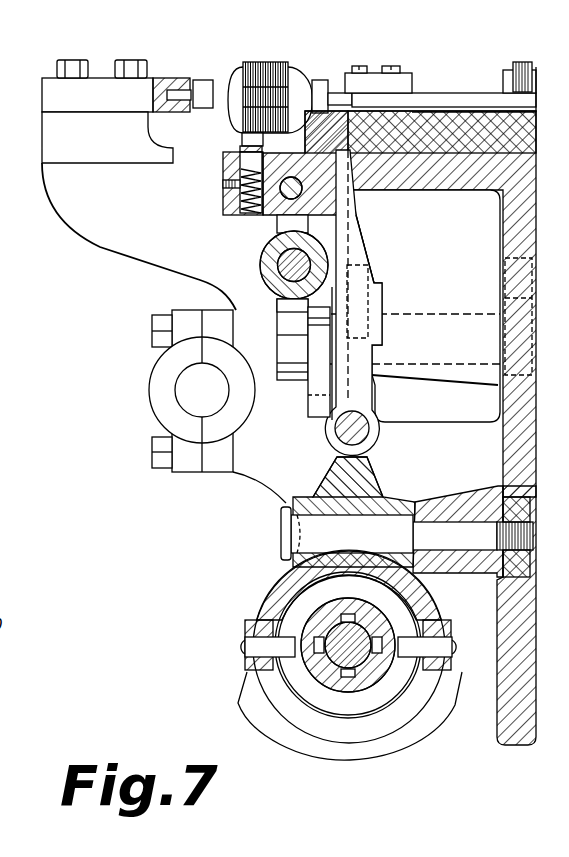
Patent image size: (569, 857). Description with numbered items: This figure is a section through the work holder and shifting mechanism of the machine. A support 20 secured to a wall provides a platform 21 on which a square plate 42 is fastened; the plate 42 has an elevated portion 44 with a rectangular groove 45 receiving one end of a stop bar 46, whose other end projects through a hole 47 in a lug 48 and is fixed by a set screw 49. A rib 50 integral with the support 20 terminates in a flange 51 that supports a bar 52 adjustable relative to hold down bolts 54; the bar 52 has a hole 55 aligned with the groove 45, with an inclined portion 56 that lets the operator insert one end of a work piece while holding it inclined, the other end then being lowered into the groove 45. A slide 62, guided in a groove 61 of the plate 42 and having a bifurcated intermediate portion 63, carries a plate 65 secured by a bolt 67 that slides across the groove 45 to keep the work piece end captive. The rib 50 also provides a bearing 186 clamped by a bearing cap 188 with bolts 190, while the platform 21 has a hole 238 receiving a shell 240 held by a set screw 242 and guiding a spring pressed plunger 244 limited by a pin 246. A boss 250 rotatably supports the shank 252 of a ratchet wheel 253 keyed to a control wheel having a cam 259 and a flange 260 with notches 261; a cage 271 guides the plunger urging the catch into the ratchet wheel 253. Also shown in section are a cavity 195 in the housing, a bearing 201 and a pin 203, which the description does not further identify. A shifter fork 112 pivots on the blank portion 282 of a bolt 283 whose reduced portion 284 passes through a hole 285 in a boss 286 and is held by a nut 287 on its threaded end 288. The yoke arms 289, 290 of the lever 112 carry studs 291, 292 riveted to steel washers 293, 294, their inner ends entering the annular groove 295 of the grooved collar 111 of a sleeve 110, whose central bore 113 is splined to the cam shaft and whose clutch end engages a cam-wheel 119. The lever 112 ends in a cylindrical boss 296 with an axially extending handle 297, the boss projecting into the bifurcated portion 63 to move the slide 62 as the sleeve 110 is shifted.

The support 20 is at (518, 707).
The platform 21 is at (227, 207).
The square plate 42 is at (443, 125).
The elevated portion 44 is at (388, 100).
The rectangular groove 45 is at (325, 125).
The stop bar 46 is at (475, 98).
The hole 47 is at (502, 77).
The lug 48 is at (537, 68).
The set screw 49 is at (518, 63).
The rib 50 is at (142, 235).
The flange 51 is at (77, 125).
The bar 52 is at (60, 92).
The hold down bolts 54 is at (72, 67).
The hole 55 is at (168, 116).
The inclined portion 56 is at (192, 110).
The groove 61 is at (396, 165).
The slide 62 is at (366, 232).
The bifurcated intermediate portion 63 is at (311, 82).
The plate 65 is at (378, 85).
The bolt 67 is at (368, 66).
The sleeve 110 is at (302, 700).
The grooved collar 111 is at (350, 683).
The shifter fork 112 is at (348, 478).
The central bore 113 is at (367, 672).
The cam-wheel 119 is at (250, 705).
The bearing 186 is at (218, 433).
The bearing cap 188 is at (165, 412).
The bolts 190 is at (163, 453).
The cavity 195 is at (400, 283).
The bearing 201 is at (277, 235).
The pin 203 is at (330, 215).
The hole 238 is at (228, 162).
The shell 240 is at (246, 148).
The set screw 242 is at (238, 195).
The spring pressed plunger 244 is at (242, 133).
The pin 246 is at (225, 184).
The boss 250 is at (440, 318).
The shank 252 is at (468, 318).
The ratchet wheel 253 is at (292, 318).
The cam 259 is at (356, 395).
The flange 260 is at (323, 405).
The notches 261 is at (327, 390).
The cage 271 is at (282, 306).
The blank portion 282 is at (392, 525).
The bolt 283 is at (290, 532).
The reduced portion 284 is at (470, 530).
The hole 285 is at (470, 572).
The boss 286 is at (432, 508).
The nut 287 is at (456, 632).
The threaded end 288 is at (498, 535).
The arm 289 is at (272, 592).
The arm 290 is at (450, 698).
The stud 291 is at (285, 652).
The stud 292 is at (410, 673).
The steel washer 293 is at (245, 627).
The steel washer 294 is at (450, 663).
The annular groove 295 is at (328, 700).
The cylindrical boss 296 is at (327, 108).
The handle 297 is at (233, 85).